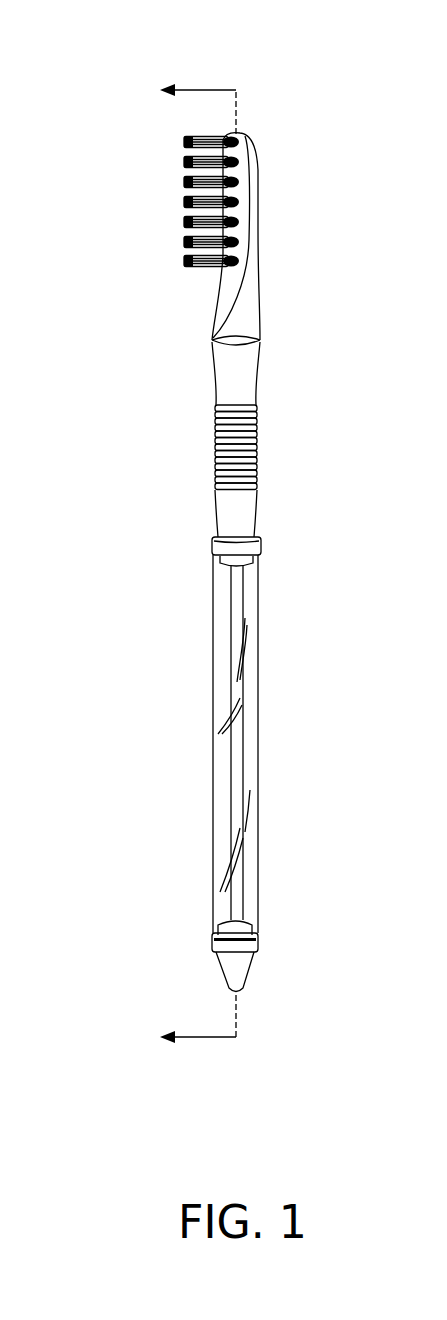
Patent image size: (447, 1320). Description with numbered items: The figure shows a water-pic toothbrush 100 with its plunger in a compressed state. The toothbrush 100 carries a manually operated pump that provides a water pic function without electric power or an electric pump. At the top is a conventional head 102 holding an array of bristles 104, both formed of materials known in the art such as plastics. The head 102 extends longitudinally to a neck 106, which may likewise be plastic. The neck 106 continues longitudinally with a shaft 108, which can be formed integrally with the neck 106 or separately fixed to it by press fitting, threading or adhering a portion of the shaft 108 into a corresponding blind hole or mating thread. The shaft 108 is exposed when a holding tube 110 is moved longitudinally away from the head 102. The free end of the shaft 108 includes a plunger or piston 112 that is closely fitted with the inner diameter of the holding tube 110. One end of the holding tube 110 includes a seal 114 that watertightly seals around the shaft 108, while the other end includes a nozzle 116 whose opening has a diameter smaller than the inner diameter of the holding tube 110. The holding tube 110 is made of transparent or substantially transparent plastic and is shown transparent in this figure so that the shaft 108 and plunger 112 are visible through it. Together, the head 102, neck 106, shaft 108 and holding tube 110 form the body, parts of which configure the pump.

The toothbrush 100 is at (131, 52).
The head 102 is at (275, 214).
The bristles 104 is at (157, 212).
The neck 106 is at (258, 373).
The shaft 108 is at (243, 733).
The holding tube 110 is at (258, 592).
The plunger or piston 112 is at (258, 930).
The seal 114 is at (258, 537).
The nozzle 116 is at (255, 968).